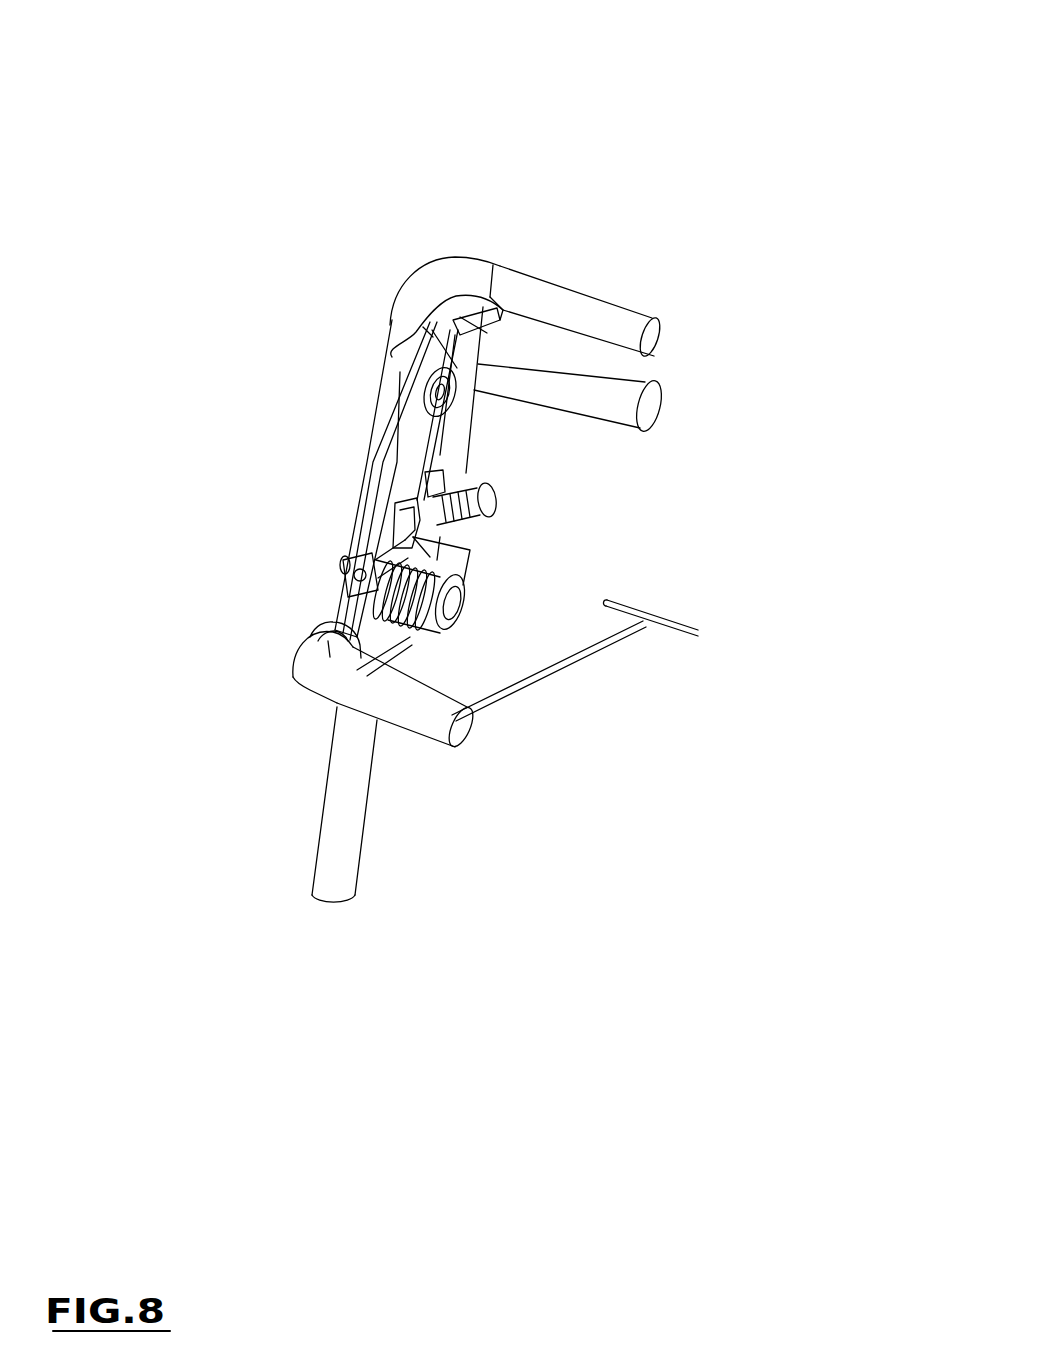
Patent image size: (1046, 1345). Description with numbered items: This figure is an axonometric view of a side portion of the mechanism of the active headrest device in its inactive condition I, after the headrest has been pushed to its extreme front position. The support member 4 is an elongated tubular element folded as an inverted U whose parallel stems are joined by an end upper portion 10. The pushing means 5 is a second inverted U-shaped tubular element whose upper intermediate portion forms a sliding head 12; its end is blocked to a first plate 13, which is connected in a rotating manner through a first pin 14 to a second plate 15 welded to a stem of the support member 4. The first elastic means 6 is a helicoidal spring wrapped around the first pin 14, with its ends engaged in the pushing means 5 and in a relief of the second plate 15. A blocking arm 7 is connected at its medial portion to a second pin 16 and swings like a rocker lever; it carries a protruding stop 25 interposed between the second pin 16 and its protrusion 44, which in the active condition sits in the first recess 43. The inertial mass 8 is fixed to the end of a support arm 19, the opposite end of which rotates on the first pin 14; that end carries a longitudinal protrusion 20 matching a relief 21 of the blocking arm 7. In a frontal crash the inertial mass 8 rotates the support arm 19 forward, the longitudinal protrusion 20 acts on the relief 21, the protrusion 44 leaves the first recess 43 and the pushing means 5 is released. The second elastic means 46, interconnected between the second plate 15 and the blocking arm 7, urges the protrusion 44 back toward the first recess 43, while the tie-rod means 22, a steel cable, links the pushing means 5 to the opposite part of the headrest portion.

The support member 4 is at (395, 353).
The pushing means 5 is at (303, 637).
The first elastic means 6 is at (318, 628).
The blocking arm 7 is at (428, 430).
The inertial mass 8 is at (643, 383).
The end upper portion 10 is at (615, 327).
The sliding head 12 is at (421, 722).
The first plate 13 is at (393, 567).
The first pin 14 is at (395, 617).
The second plate 15 is at (402, 458).
The second pin 16 is at (427, 330).
The support arm 19 is at (480, 477).
The longitudinal protrusion 20 is at (497, 317).
The relief 21 is at (470, 323).
The tie-rod means 22 is at (565, 667).
The protruding stop 25 is at (477, 403).
The first recess 43 is at (385, 555).
The protrusion 44 is at (460, 553).
The second elastic means 46 is at (395, 477).
The inactive condition I is at (840, 740).